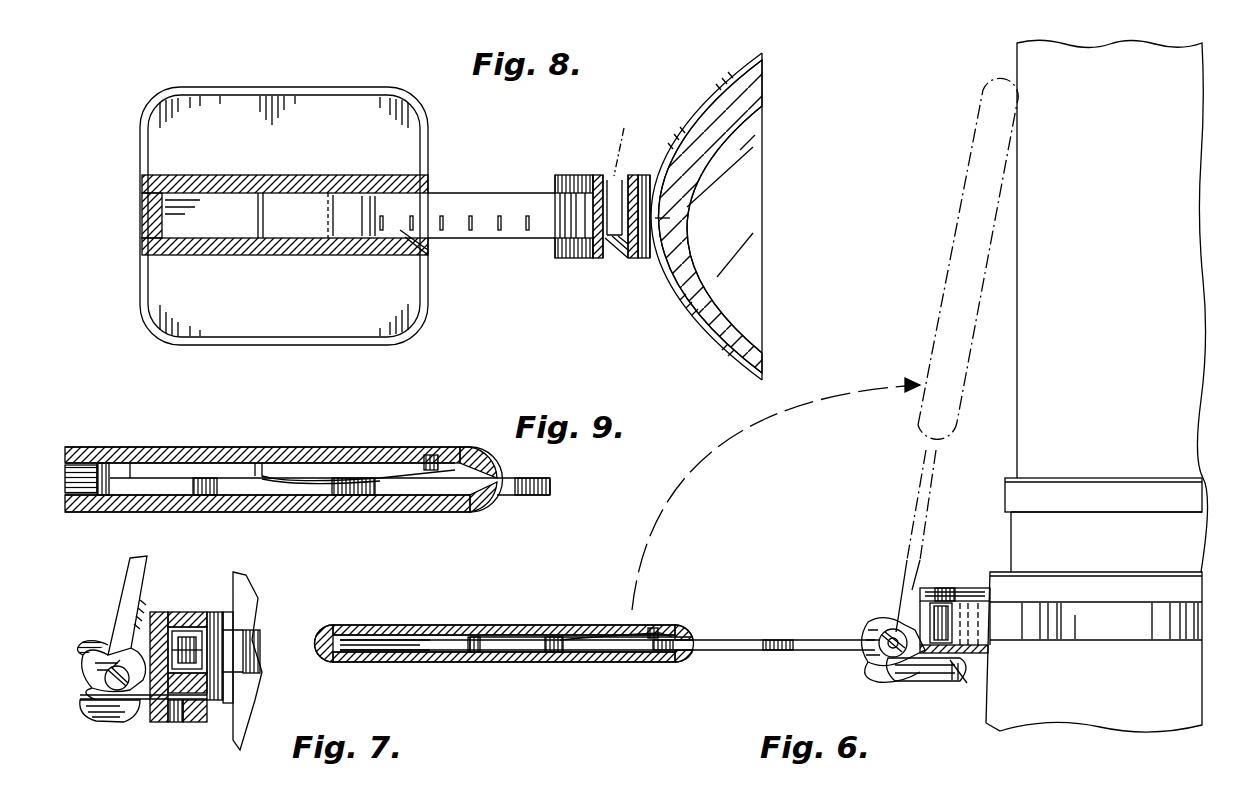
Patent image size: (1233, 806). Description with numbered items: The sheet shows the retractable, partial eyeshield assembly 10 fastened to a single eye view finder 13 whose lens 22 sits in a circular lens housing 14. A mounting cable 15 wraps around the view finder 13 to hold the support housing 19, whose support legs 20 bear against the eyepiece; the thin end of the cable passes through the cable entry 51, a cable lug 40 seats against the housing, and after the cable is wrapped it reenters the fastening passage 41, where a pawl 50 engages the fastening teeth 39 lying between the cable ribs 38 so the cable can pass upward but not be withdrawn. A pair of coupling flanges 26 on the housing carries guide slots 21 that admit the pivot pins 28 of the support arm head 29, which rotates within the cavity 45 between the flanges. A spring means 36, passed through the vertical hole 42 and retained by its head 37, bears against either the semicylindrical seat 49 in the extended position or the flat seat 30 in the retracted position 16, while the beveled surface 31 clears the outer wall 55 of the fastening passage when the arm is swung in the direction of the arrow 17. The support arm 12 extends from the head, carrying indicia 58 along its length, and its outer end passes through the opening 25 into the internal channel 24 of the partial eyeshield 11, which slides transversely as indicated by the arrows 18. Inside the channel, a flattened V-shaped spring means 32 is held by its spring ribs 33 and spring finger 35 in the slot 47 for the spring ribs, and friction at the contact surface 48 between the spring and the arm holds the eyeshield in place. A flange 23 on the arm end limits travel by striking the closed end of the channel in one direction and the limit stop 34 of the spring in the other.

In FIG. 8, the retractable, partial eyeshield assembly 10 is at (447, 42).
In FIG. 6, the retractable, partial eyeshield assembly 10 is at (699, 732).
In FIG. 8, the partial eyeshield 11 is at (156, 331).
In FIG. 9, the partial eyeshield 11 is at (173, 447).
In FIG. 6, the partial eyeshield 11 is at (378, 625).
In FIG. 8, the support arm 12 is at (474, 193).
In FIG. 9, the support arm 12 is at (548, 497).
In FIG. 7, the support arm 12 is at (148, 566).
In FIG. 6, the support arm 12 is at (718, 653).
In FIG. 8, the view finder 13 is at (764, 92).
In FIG. 6, the view finder 13 is at (982, 708).
In FIG. 6, the lens housing 14 is at (1015, 415).
In FIG. 8, the mounting cable 15 is at (737, 62).
In FIG. 7, the mounting cable 15 is at (176, 640).
In FIG. 6, the mounting cable 15 is at (1121, 627).
In FIG. 6, the retracted position 16 is at (960, 197).
In FIG. 8, the arrow 17 is at (750, 425).
In FIG. 6, the arrow 17 is at (776, 494).
In FIG. 8, the arrows indicating transverse movement 18 is at (340, 72).
In FIG. 8, the support housing 19 is at (541, 277).
In FIG. 7, the support housing 19 is at (165, 739).
In FIG. 6, the support housing 19 is at (925, 696).
In FIG. 8, the support legs 20 is at (662, 172).
In FIG. 9, the support legs 20 is at (262, 541).
In FIG. 7, the support legs 20 is at (228, 612).
In FIG. 6, the support legs 20 is at (982, 593).
In FIG. 7, the guide slots 21 is at (86, 690).
In FIG. 6, the guide slots 21 is at (860, 637).
In FIG. 8, the lens 22 is at (754, 168).
In FIG. 8, the flange 23 is at (259, 228).
In FIG. 9, the flange 23 is at (132, 466).
In FIG. 6, the flange 23 is at (480, 638).
In FIG. 8, the internal channel 24 is at (209, 228).
In FIG. 9, the internal channel 24 is at (95, 485).
In FIG. 6, the internal channel 24 is at (425, 638).
In FIG. 9, the opening 25 is at (505, 478).
In FIG. 6, the opening 25 is at (700, 634).
In FIG. 8, the coupling flanges 26 is at (568, 177).
In FIG. 7, the coupling flanges 26 is at (94, 641).
In FIG. 6, the coupling flanges 26 is at (880, 662).
In FIG. 8, the pivot pin 28 is at (605, 177).
In FIG. 7, the pivot pin 28 is at (100, 700).
In FIG. 6, the pivot pin 28 is at (872, 618).
In FIG. 8, the support arm head 29 is at (557, 188).
In FIG. 7, the flat seat 30 is at (135, 712).
In FIG. 6, the flat seat 30 is at (917, 620).
In FIG. 7, the beveled surface 31 is at (133, 645).
In FIG. 6, the beveled surface 31 is at (896, 613).
In FIG. 9, the spring means 32 is at (316, 476).
In FIG. 6, the spring means 32 is at (606, 654).
In FIG. 8, the spring ribs 33 is at (427, 185).
In FIG. 9, the spring ribs 33 is at (456, 460).
In FIG. 6, the spring ribs 33 is at (672, 626).
In FIG. 8, the limit stop 34 is at (322, 224).
In FIG. 9, the limit stop 34 is at (262, 460).
In FIG. 6, the limit stop 34 is at (548, 652).
In FIG. 8, the spring finger 35 is at (432, 180).
In FIG. 9, the spring finger 35 is at (492, 458).
In FIG. 6, the spring finger 35 is at (695, 627).
In FIG. 7, the spring means 36 is at (112, 722).
In FIG. 6, the spring means 36 is at (900, 683).
In FIG. 7, the head 37 is at (238, 748).
In FIG. 6, the head 37 is at (963, 683).
In FIG. 7, the cable ribs 38 is at (212, 612).
In FIG. 8, the fastening teeth 39 is at (597, 260).
In FIG. 8, the cable lug 40 is at (633, 177).
In FIG. 8, the fastening passage 41 is at (637, 235).
In FIG. 7, the fastening passage 41 is at (235, 640).
In FIG. 6, the fastening passage 41 is at (962, 587).
In FIG. 6, the vertical hole 42 is at (953, 682).
In FIG. 8, the cavity 45 is at (607, 177).
In FIG. 8, the slot for the spring ribs 47 is at (398, 237).
In FIG. 9, the slot for the spring ribs 47 is at (430, 455).
In FIG. 6, the slot for the spring ribs 47 is at (652, 628).
In FIG. 9, the contact surface 48 is at (327, 492).
In FIG. 6, the contact surface 48 is at (577, 652).
In FIG. 7, the semicylindrical seat 49 is at (92, 680).
In FIG. 6, the semicylindrical seat 49 is at (878, 665).
In FIG. 8, the pawl 50 is at (608, 260).
In FIG. 7, the pawl 50 is at (225, 660).
In FIG. 8, the cable entry 51 is at (683, 221).
In FIG. 6, the outer wall 55 is at (933, 598).
In FIG. 8, the indicia 58 is at (480, 228).